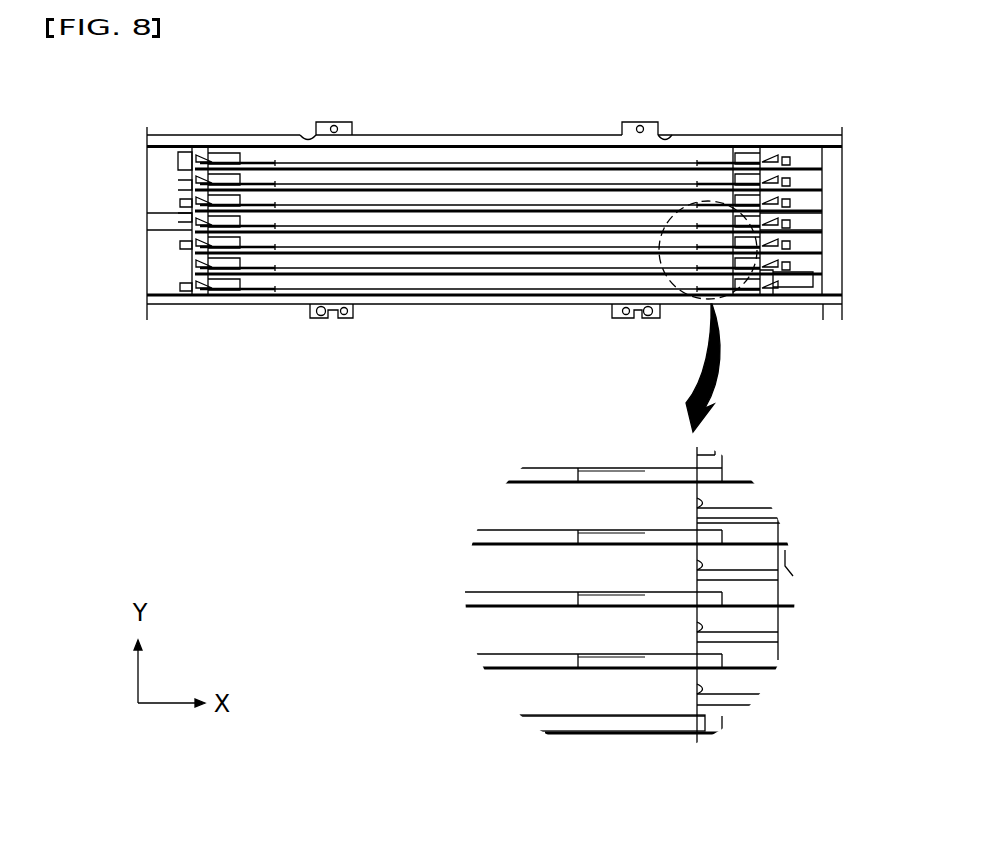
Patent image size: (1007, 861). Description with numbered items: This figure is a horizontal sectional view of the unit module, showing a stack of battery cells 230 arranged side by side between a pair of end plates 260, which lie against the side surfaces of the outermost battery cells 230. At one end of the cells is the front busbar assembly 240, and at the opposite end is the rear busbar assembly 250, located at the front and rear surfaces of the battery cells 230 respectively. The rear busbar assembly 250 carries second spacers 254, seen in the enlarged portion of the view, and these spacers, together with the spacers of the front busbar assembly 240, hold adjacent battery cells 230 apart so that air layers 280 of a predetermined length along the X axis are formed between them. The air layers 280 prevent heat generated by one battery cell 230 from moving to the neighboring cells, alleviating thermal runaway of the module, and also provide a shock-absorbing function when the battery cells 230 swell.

The battery cells 230 is at (317, 239).
The front busbar assembly 240 is at (155, 256).
The rear busbar assembly 250 is at (817, 257).
The second spacers 254 is at (712, 538).
The end plates 260 is at (528, 146).
The air layers 280 is at (470, 600).